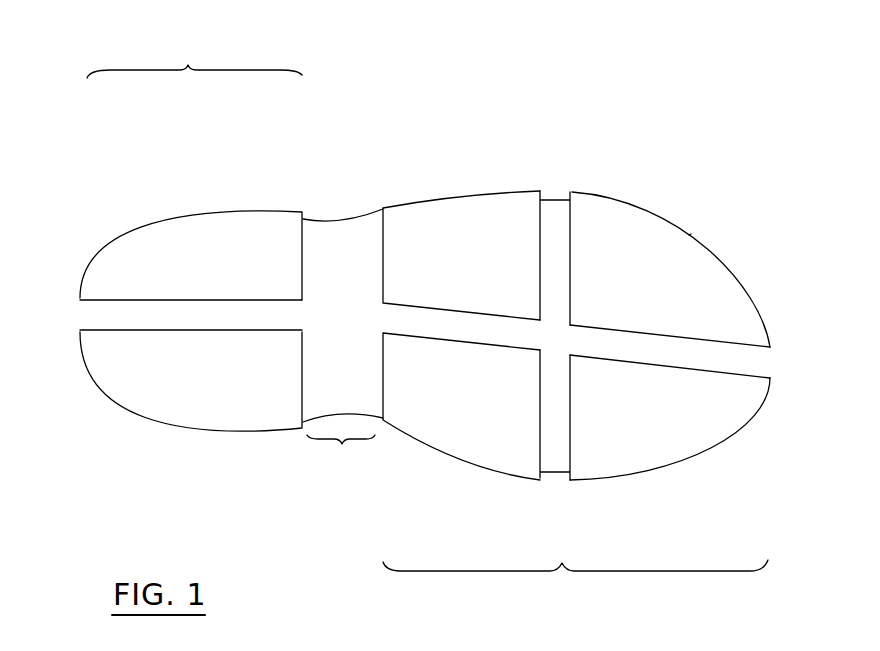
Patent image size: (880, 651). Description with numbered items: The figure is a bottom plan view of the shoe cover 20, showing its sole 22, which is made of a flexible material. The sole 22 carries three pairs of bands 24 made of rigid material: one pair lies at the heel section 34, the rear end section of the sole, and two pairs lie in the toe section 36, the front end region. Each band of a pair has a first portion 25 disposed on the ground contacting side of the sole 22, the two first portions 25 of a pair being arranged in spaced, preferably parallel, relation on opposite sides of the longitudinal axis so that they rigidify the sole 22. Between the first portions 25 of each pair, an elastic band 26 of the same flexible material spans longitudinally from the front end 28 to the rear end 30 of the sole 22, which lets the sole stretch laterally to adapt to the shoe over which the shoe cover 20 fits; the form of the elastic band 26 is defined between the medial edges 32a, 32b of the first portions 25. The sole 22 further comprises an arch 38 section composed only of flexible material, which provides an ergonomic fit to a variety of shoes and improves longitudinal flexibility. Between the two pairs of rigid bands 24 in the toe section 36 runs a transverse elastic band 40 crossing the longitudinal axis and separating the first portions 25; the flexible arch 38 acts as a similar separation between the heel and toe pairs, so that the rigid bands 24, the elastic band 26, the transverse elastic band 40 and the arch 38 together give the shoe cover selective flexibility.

The shoe cover 20 is at (640, 110).
The sole 22 is at (421, 158).
The bands 24 is at (121, 254).
The first portion 25 is at (178, 273).
The elastic band 26 is at (396, 324).
The front end 28 is at (758, 377).
The rear end 30 is at (82, 317).
The medial edge 32a is at (712, 374).
The medial edge 32b is at (699, 341).
The heel section 34 is at (194, 59).
The toe section 36 is at (695, 233).
The arch section 38 is at (341, 455).
The transverse elastic band 40 is at (555, 228).